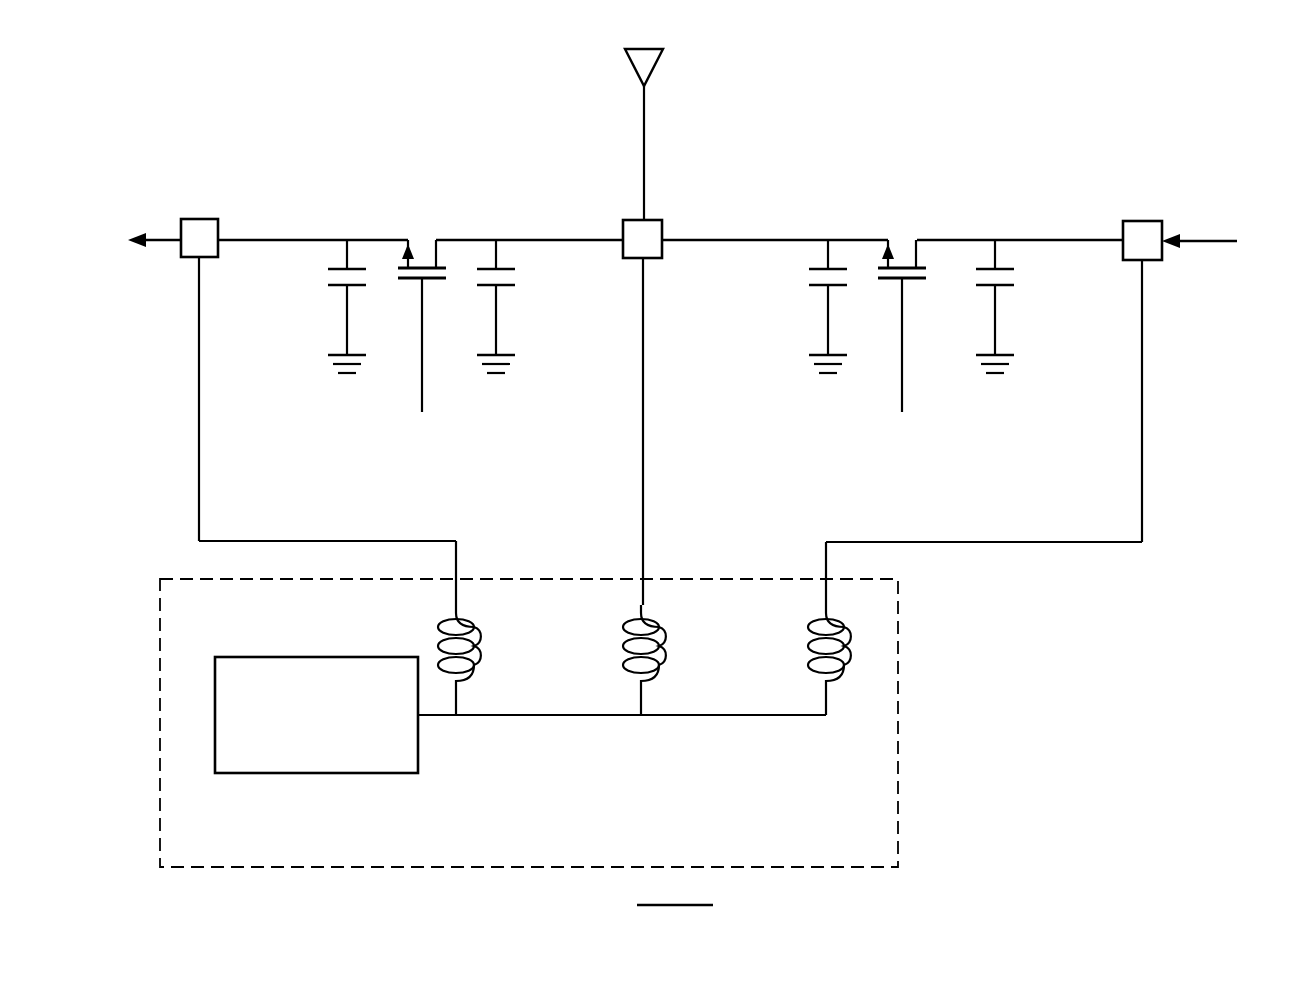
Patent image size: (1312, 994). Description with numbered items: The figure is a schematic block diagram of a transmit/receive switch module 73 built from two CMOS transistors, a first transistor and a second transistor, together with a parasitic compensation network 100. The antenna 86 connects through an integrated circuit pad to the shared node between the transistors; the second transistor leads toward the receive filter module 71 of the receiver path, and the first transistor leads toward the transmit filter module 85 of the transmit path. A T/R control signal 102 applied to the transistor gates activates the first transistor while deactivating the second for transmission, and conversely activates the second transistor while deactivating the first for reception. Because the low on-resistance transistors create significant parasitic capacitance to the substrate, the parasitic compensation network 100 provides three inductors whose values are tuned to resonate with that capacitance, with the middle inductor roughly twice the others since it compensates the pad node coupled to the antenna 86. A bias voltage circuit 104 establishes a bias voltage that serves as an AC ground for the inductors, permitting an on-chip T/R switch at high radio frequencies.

The transmit/receive switch module 73 is at (682, 477).
The antenna 86 is at (644, 118).
The T/R control signal 102 is at (661, 378).
The receive filter module 71 is at (123, 237).
The transmit filter module 85 is at (1230, 242).
The parasitic compensation network 100 is at (529, 723).
The bias voltage circuit 104 is at (316, 715).